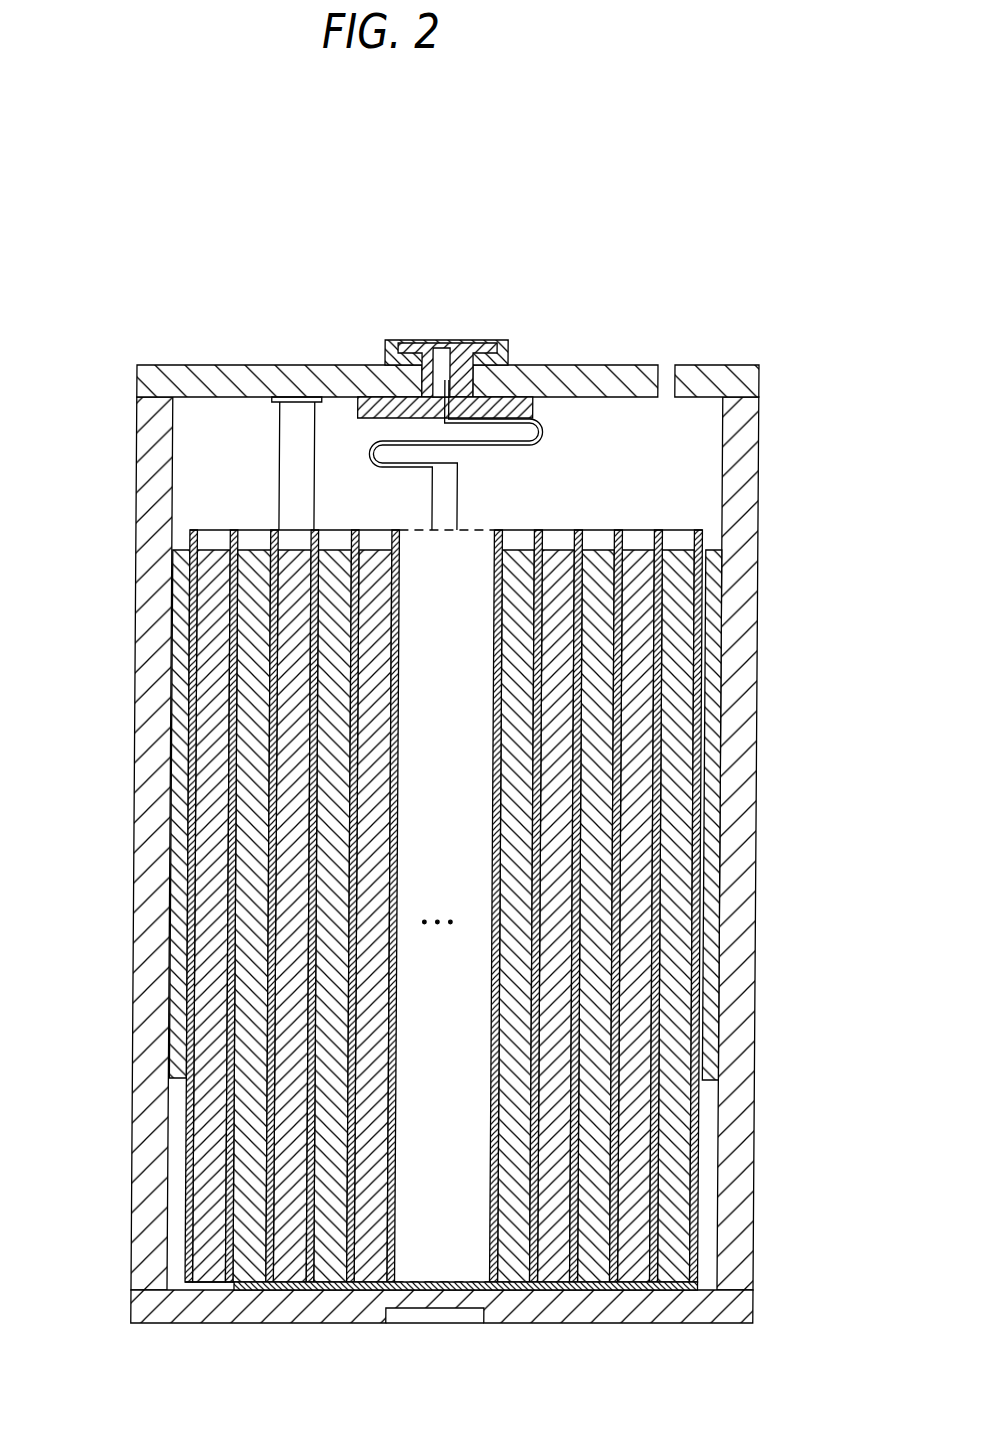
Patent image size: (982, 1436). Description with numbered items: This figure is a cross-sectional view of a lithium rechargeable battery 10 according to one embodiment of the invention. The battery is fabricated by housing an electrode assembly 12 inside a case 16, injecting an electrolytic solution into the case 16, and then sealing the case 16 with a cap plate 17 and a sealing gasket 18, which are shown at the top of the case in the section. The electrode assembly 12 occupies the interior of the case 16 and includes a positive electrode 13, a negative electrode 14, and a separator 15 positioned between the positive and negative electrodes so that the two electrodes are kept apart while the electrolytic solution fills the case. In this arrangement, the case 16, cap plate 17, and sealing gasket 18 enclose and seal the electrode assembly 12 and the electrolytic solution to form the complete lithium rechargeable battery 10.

The lithium rechargeable battery 10 is at (785, 308).
The electrode assembly 12 is at (616, 507).
The positive electrode 13 is at (677, 1143).
The negative electrode 14 is at (245, 1105).
The separator 15 is at (230, 1213).
The case 16 is at (152, 495).
The cap plate 17 is at (567, 378).
The sealing gasket 18 is at (394, 340).